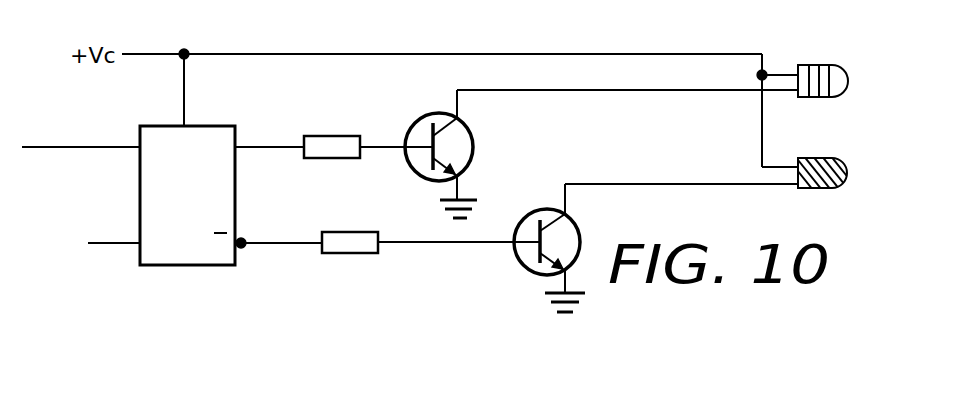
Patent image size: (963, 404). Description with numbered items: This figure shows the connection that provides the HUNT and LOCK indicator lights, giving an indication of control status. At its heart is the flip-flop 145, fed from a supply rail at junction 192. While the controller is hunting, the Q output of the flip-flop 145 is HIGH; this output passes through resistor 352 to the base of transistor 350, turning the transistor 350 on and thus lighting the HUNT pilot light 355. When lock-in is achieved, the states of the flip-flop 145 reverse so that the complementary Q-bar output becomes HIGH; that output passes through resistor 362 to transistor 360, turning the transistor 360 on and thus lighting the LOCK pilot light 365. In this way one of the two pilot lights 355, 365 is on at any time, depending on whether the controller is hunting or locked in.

The supply voltage junction 192 is at (185, 50).
The flip-flop 145 is at (216, 136).
The transistor 350 is at (463, 145).
The resistor 352 is at (326, 152).
The transistor 360 is at (572, 235).
The resistor 362 is at (343, 246).
The pilot light 355 is at (838, 63).
The pilot light 365 is at (838, 157).